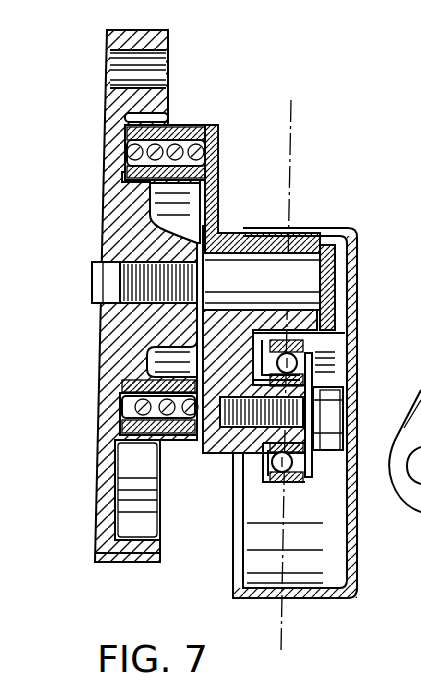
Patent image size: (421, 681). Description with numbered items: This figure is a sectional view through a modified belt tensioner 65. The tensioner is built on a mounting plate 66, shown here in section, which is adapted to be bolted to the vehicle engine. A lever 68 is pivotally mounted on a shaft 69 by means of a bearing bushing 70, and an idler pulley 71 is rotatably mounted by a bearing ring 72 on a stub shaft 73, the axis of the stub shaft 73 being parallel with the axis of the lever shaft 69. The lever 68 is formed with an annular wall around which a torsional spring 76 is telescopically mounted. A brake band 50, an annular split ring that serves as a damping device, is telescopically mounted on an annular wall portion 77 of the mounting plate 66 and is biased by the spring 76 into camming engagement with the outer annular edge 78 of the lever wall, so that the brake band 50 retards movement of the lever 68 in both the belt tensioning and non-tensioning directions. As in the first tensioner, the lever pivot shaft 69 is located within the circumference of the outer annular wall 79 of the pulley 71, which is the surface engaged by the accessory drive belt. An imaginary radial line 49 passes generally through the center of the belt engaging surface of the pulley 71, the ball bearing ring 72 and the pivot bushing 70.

The imaginary radial line 49 is at (292, 150).
The brake band 50 is at (100, 396).
The modified belt tensioner 65 is at (247, 105).
The mounting plate 66 is at (106, 77).
The lever 68 is at (220, 183).
The shaft 69 is at (312, 277).
The bearing bushing 70 is at (305, 228).
The idler pulley 71 is at (357, 592).
The bearing ring 72 is at (267, 480).
The stub shaft 73 is at (312, 370).
The torsional spring 76 is at (183, 127).
The annular wall portion 77 is at (140, 376).
The outer annular edge 78 is at (124, 176).
The outer annular wall 79 is at (307, 595).